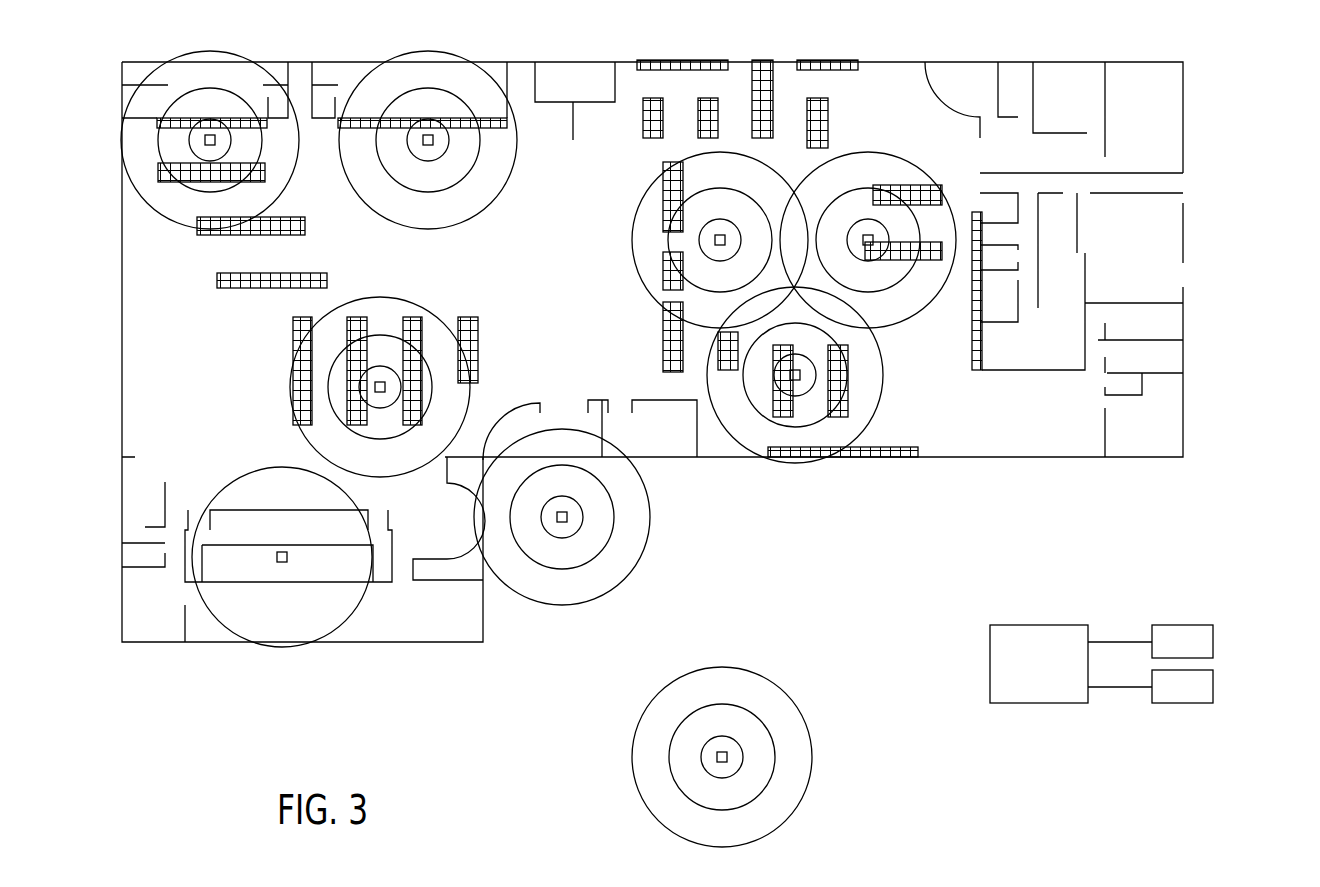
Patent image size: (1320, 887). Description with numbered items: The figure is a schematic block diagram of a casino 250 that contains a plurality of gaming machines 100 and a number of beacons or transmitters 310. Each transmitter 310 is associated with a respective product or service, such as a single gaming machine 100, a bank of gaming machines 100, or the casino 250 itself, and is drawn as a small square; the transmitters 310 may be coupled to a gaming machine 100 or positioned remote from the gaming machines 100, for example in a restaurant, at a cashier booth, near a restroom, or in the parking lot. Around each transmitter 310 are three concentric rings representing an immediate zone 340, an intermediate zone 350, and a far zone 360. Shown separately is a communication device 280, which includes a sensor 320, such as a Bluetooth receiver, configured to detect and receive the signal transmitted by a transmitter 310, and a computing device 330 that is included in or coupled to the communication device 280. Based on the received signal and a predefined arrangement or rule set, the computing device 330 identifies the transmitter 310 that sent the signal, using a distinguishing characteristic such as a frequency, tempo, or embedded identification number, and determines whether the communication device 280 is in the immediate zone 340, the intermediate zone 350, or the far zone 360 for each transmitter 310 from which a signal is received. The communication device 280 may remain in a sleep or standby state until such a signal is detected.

The gaming machine 100 is at (155, 177).
The casino 250 is at (143, 668).
The communication device 280 is at (1065, 705).
The transmitter 310 is at (222, 144).
The sensor 320 is at (1202, 643).
The computing device 330 is at (1202, 688).
The immediate zone 340 is at (185, 145).
The intermediate zone 350 is at (186, 93).
The far zone 360 is at (150, 207).